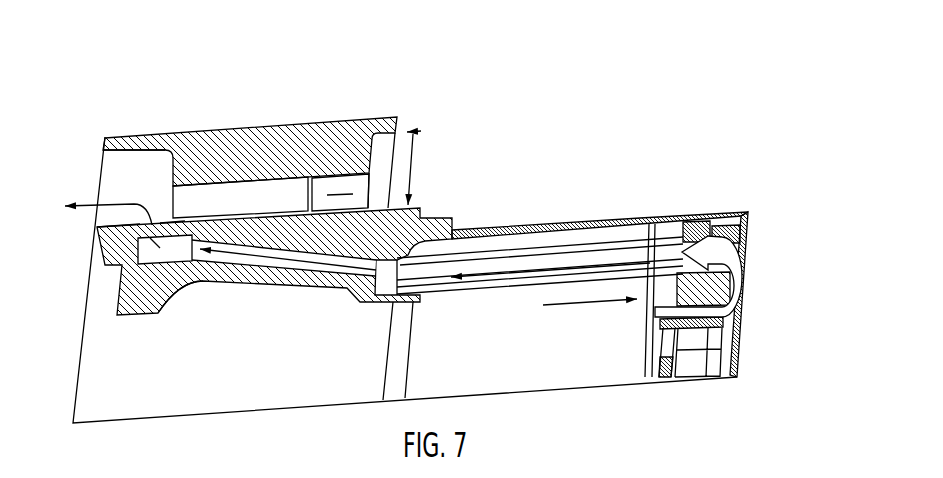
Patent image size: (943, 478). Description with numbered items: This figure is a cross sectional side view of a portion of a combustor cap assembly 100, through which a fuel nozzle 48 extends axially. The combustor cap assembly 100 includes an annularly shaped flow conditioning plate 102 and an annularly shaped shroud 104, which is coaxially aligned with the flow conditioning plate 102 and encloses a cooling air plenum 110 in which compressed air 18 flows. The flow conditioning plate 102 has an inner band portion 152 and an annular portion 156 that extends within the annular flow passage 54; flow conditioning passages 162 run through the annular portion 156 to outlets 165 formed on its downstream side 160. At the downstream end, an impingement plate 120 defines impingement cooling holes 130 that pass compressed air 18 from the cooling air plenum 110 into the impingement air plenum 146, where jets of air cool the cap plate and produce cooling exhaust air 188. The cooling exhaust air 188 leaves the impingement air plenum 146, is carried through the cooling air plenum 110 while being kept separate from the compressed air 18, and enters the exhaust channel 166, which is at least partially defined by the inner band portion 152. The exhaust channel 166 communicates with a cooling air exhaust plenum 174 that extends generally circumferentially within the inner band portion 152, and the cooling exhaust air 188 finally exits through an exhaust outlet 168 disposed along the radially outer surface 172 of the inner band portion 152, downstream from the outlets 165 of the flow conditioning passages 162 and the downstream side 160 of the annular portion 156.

The combustor cap assembly 100 is at (602, 65).
The flow conditioning plate 102 is at (347, 120).
The shroud 104 is at (503, 228).
The cooling air plenum 110 is at (562, 340).
The fuel nozzle 48 is at (487, 287).
The compressed air 18 is at (603, 306).
The annular flow passage 54 is at (417, 166).
The impingement plate 120 is at (692, 328).
The impingement cooling holes 130 is at (663, 378).
The impingement air plenum 146 is at (733, 337).
The inner band portion 152 is at (259, 296).
The annular portion 156 is at (397, 128).
The downstream side 160 is at (153, 149).
The flow conditioning passages 162 is at (271, 196).
The outlets 165 is at (172, 222).
The exhaust channel 166 is at (313, 255).
The exhaust outlet 168 is at (133, 221).
The radially outer surface 172 is at (160, 248).
The cooling air exhaust plenum 174 is at (157, 250).
The cooling exhaust air 188 is at (90, 203).